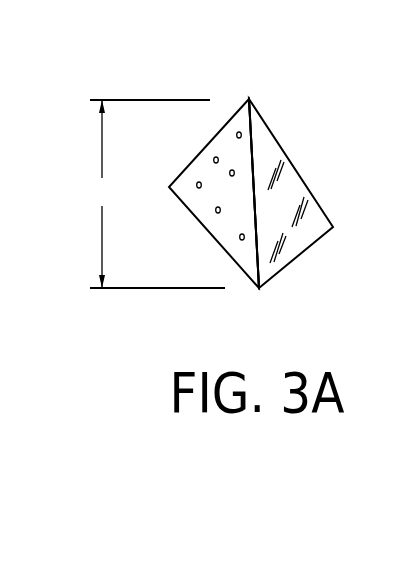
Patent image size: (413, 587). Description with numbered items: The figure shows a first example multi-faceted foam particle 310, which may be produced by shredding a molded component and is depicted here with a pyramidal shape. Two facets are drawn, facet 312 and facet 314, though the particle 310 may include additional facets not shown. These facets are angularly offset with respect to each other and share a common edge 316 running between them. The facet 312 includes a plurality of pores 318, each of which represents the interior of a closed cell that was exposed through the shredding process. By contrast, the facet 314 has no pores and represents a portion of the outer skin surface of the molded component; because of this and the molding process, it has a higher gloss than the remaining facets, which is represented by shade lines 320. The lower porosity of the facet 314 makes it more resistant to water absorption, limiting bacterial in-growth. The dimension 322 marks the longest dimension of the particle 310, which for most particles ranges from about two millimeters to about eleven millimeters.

The multi-faceted particle 310 is at (269, 161).
The facet 312 is at (198, 193).
The facet 314 is at (316, 193).
The common edge 316 is at (254, 148).
The pores 318 is at (236, 135).
The shade lines 320 is at (287, 186).
The dimension 322 is at (153, 194).